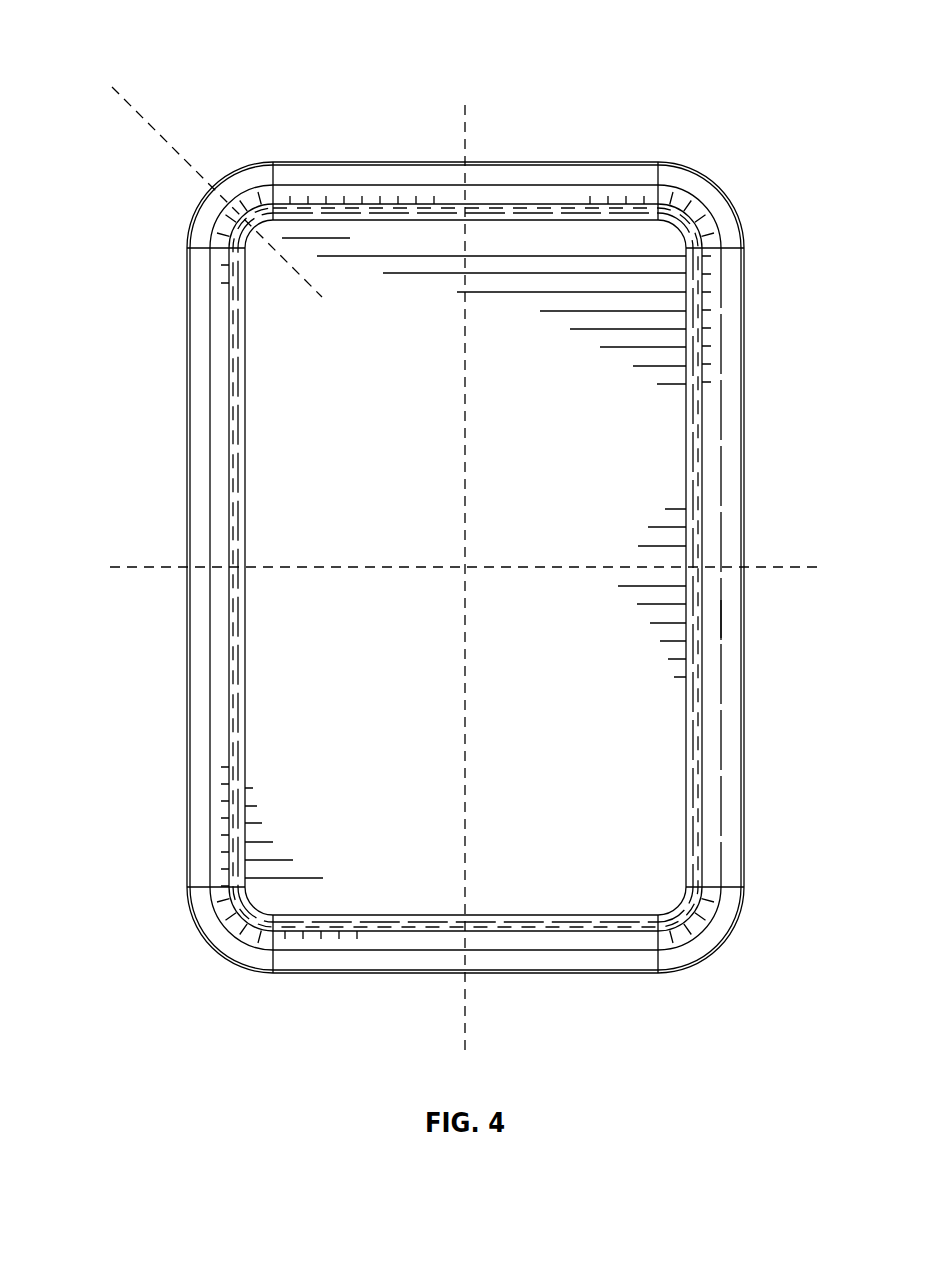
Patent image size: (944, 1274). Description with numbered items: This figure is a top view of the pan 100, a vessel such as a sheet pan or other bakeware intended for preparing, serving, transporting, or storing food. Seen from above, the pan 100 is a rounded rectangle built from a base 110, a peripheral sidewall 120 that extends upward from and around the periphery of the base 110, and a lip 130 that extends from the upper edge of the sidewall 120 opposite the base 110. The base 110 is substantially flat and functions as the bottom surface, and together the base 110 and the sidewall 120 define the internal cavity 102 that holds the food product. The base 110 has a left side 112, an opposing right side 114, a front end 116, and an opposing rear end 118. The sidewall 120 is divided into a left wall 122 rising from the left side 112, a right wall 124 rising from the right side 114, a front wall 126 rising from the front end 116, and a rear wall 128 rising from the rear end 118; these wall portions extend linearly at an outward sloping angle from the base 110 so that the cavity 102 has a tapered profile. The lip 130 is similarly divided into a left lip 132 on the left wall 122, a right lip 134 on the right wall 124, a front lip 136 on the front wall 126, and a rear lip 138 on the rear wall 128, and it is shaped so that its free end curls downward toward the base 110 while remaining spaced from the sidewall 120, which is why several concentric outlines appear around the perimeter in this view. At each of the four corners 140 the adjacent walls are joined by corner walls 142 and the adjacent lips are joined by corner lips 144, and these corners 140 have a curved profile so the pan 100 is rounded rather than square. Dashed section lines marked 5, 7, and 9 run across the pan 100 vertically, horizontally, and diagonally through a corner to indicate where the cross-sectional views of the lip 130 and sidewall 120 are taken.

The pan 100 is at (137, 42).
The cavity 102 is at (648, 347).
The base 110 is at (258, 512).
The left side 112 is at (753, 503).
The right side 114 is at (175, 528).
The front end 116 is at (540, 148).
The rear end 118 is at (557, 983).
The sidewall 120 is at (385, 937).
The left wall 122 is at (690, 480).
The right wall 124 is at (228, 737).
The front wall 126 is at (650, 197).
The rear wall 128 is at (568, 933).
The lip 130 is at (748, 810).
The left lip 132 is at (735, 720).
The right lip 134 is at (195, 775).
The front lip 136 is at (608, 160).
The rear lip 138 is at (623, 958).
The corners 140 is at (208, 165).
The corner walls 142 is at (220, 213).
The corner lips 144 is at (200, 210).
The section line 5- 5 is at (465, 105).
The section line 7- 7 is at (110, 567).
The section line 9- 9 is at (112, 87).